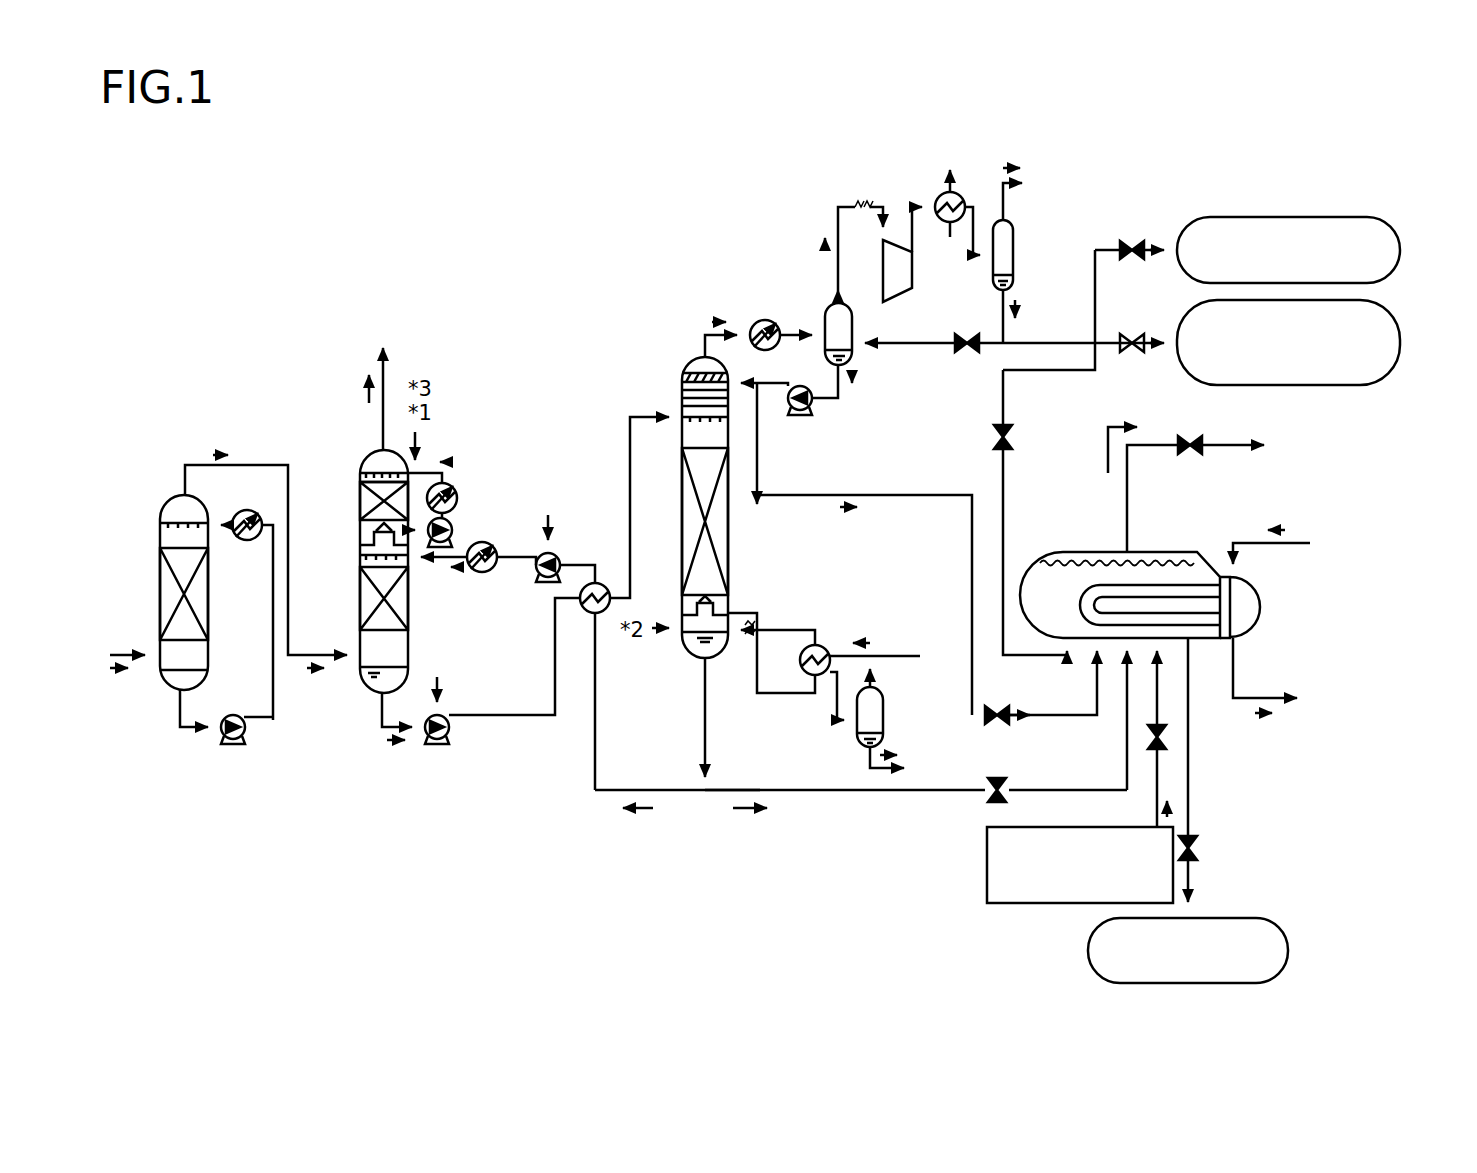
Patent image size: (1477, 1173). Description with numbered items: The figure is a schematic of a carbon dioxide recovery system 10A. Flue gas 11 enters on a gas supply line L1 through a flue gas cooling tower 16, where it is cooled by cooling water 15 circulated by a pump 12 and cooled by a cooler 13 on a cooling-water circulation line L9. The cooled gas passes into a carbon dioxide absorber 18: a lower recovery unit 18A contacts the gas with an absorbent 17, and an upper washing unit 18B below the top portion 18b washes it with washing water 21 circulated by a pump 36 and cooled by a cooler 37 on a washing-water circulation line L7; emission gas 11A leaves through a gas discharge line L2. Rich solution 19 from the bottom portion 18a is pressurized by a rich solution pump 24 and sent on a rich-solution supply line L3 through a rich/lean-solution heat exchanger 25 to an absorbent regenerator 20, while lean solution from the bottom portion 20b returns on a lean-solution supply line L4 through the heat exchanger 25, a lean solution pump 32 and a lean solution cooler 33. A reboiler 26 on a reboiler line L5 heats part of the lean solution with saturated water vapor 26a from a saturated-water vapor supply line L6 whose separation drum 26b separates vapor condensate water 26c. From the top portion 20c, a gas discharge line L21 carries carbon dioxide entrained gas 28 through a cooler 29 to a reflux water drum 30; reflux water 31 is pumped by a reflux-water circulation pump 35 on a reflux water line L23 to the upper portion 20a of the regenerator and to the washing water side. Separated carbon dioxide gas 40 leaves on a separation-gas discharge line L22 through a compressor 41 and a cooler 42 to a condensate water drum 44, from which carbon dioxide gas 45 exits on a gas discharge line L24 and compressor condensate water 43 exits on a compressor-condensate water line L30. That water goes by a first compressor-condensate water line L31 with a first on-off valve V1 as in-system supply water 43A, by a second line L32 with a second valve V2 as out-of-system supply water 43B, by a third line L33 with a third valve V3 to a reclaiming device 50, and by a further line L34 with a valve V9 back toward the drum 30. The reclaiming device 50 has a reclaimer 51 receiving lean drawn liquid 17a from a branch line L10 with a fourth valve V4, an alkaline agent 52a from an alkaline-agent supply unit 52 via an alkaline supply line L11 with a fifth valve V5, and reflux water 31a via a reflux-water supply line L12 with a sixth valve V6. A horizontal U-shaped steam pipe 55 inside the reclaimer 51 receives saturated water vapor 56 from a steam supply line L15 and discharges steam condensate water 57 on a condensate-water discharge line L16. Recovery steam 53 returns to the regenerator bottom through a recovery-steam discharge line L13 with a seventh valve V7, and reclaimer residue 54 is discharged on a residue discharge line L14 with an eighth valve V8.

The CO2 recovery system 10A is at (725, 128).
The flue gas 11 is at (122, 690).
The emission gas 11A is at (362, 392).
The pump 12 is at (234, 713).
The cooler 13 is at (258, 542).
The cooling water 15 is at (232, 538).
The flue gas cooling tower 16 is at (162, 498).
The CO2 absorbent (lean solution) 17 is at (458, 569).
The lean drawn liquid 17a is at (748, 812).
The CO2 absorber 18 is at (397, 425).
The bottom portion 18a is at (368, 697).
The absorber top 18b is at (358, 466).
The CO2 recovery unit 18A is at (360, 582).
The washing unit 18B is at (358, 507).
The rich solution 19 is at (410, 748).
The absorbent regenerator 20 is at (688, 340).
The regenerator top section 20a is at (680, 410).
The bottom portion 20b is at (688, 662).
The top portion 20c is at (680, 374).
The washing water 21 is at (448, 458).
The rich solution pump 24 is at (450, 740).
The rich/lean-solution heat exchanger 25 is at (586, 610).
The reboiler 26 is at (820, 645).
The saturated water vapor 26a is at (865, 641).
The separation drum 26b is at (885, 702).
The vapor condensate water 26c is at (900, 750).
The CO2 entrained gas 28 is at (718, 318).
The cooler 29 is at (764, 318).
The reflux water drum 30 is at (855, 326).
The reflux water 31 is at (856, 380).
The reflux water 31a is at (852, 510).
The lean solution pump 32 is at (558, 553).
The lean solution cooler 33 is at (497, 566).
The reflux-water circulation pump 35 is at (812, 408).
The pump 36 is at (455, 526).
The cooler 37 is at (457, 488).
The CO2 gas 40 is at (820, 243).
The compressor 41 is at (915, 272).
The cooler 42 is at (940, 195).
The compressor condensate water 43 is at (1018, 305).
The in-system supply water 43A is at (1400, 344).
The out-of-system supply water 43B is at (1400, 250).
The condensate water drum 44 is at (1016, 242).
The CO2 gas 45 is at (1012, 165).
The reclaiming device 50 is at (1168, 532).
The reclaimer 51 is at (1085, 550).
The alkaline-agent supply unit 52 is at (1012, 905).
The alkaline agent 52a is at (1170, 798).
The recovery steam 53 is at (1120, 425).
The reclaimer residue 54 is at (1288, 952).
The steam pipe 55 is at (1200, 625).
The saturated water vapor 56 is at (1288, 528).
The steam condensate water 57 is at (1288, 730).
The gas supply line L1 is at (275, 463).
The gas discharge line L2 is at (372, 360).
The rich-solution supply line L3 is at (632, 465).
The lean-solution supply line L4 is at (685, 795).
The reboiler line L5 is at (752, 613).
The saturated-water vapor supply line L6 is at (905, 652).
The washing-water circulation line L7 is at (452, 460).
The cooling-water circulation line L9 is at (262, 720).
The branch line L10 is at (853, 795).
The alkaline supply line L11 is at (1160, 767).
The reflux-water supply line L12 is at (1037, 713).
The recovery-steam discharge line L13 is at (1248, 443).
The residue discharge line L14 is at (1192, 885).
The steam supply line L15 is at (1240, 541).
The condensate-water discharge line L16 is at (1238, 667).
The gas discharge line L21 is at (710, 330).
The separation-gas discharge line L22 is at (830, 205).
The reflux water line L23 is at (762, 400).
The gas discharge line L24 is at (1030, 190).
The compressor-condensate water line L30 is at (1000, 312).
The first compressor-condensate water line L31 is at (1158, 340).
The second compressor-condensate water line L32 is at (1158, 246).
The third compressor-condensate water line L33 is at (1006, 400).
The condensed water return line to drum L34 is at (933, 350).
The first on-off valve V1 is at (1130, 336).
The second on-off valve V2 is at (1130, 244).
The third on-off valve V3 is at (995, 437).
The fourth on-off valve V4 is at (990, 805).
The fifth on-off valve V5 is at (1170, 737).
The sixth on-off valve V6 is at (990, 725).
The seventh on-off valve V7 is at (1190, 440).
The eighth on-off valve V8 is at (1200, 850).
The valve V9 is at (978, 352).